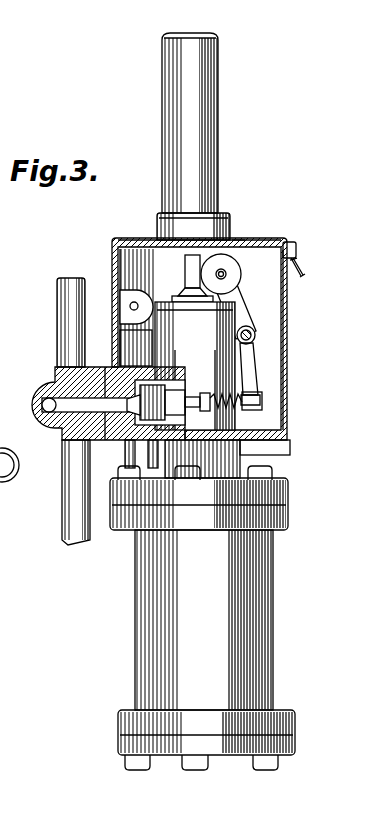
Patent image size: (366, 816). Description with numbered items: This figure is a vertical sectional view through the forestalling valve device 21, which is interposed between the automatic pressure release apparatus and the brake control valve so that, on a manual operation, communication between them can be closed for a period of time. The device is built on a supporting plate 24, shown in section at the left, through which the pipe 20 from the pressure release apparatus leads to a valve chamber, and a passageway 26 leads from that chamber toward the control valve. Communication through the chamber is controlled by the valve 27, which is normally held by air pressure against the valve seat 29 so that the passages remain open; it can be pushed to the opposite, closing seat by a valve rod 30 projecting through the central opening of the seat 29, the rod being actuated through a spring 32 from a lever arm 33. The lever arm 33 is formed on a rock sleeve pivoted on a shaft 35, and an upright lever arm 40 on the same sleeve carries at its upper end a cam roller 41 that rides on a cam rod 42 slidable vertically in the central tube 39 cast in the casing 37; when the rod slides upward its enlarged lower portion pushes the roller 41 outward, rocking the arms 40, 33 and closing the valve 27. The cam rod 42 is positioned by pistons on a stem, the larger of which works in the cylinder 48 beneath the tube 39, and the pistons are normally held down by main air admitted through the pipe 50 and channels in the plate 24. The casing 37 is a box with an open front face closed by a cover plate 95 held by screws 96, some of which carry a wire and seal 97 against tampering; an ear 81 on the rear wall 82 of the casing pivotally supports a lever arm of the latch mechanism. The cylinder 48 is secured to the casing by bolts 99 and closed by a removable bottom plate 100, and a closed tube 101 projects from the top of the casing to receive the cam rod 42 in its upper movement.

The closed tube 101 is at (218, 136).
The rear wall 82 is at (112, 266).
The valve casing 37 is at (127, 232).
The cam roller 41 is at (238, 240).
The cover plate 95 is at (287, 288).
The screws 96 is at (296, 250).
The wire and seal 97 is at (304, 270).
The cam rod 42 is at (180, 290).
The upright lever arm 40 is at (240, 294).
The shaft 35 is at (255, 336).
The lever arm 33 is at (256, 362).
The ear 81 is at (118, 300).
The central wall or tube 39 is at (195, 366).
The spring 32 is at (216, 390).
The valve seat 29 is at (136, 348).
The supporting plate 24 is at (55, 375).
The passageway 26 is at (42, 405).
The valve 27 is at (112, 430).
The valve rod 30 is at (262, 398).
The pipe 50 is at (62, 302).
The pipe 20 is at (64, 492).
The bolts 99 is at (272, 476).
The forestalling valve device 21 is at (218, 624).
The cylinder 48 is at (204, 620).
The bottom plate 100 is at (280, 762).